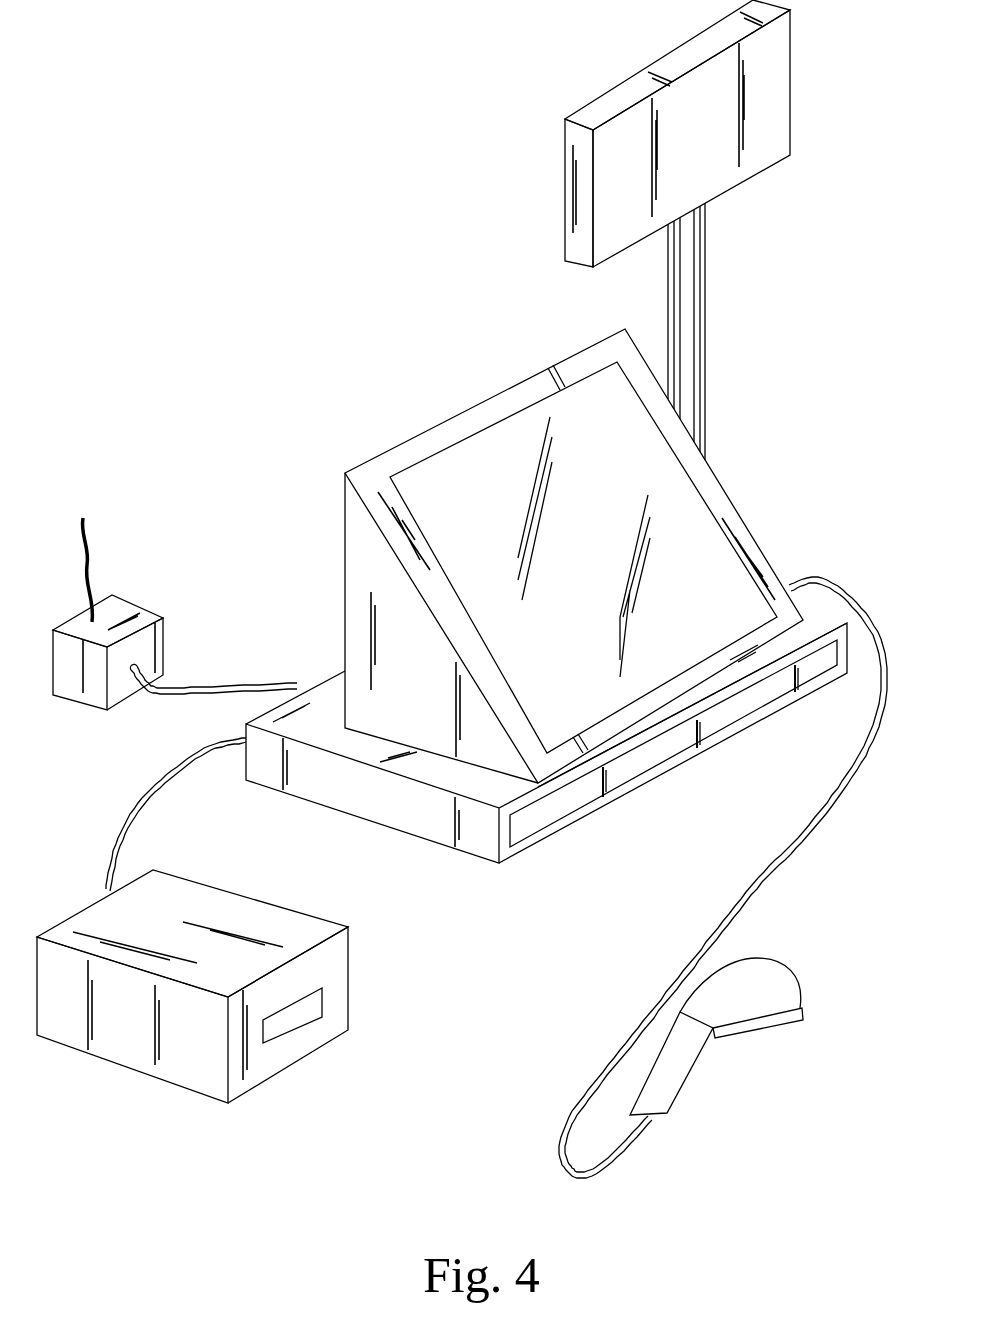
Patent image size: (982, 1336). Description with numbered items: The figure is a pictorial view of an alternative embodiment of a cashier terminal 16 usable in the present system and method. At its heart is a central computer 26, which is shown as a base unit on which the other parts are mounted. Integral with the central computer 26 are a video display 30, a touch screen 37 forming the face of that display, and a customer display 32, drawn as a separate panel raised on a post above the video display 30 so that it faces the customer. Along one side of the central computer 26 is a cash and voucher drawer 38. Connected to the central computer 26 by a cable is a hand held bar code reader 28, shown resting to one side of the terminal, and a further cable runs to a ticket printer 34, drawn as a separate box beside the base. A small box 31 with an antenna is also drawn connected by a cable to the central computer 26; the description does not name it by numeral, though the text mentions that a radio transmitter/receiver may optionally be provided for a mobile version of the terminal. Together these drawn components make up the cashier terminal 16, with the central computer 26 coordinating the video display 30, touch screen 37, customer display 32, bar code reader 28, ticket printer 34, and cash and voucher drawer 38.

The cashier terminal 16 is at (262, 470).
The central computer 26 is at (468, 765).
The hand held bar code reader 28 is at (675, 1080).
The video display 30 is at (447, 583).
The wireless receiver box 31 is at (130, 600).
The customer display 32 is at (720, 170).
The ticket printer 34 is at (190, 1058).
The touch screen 37 is at (690, 527).
The cash and voucher drawer 38 is at (575, 790).